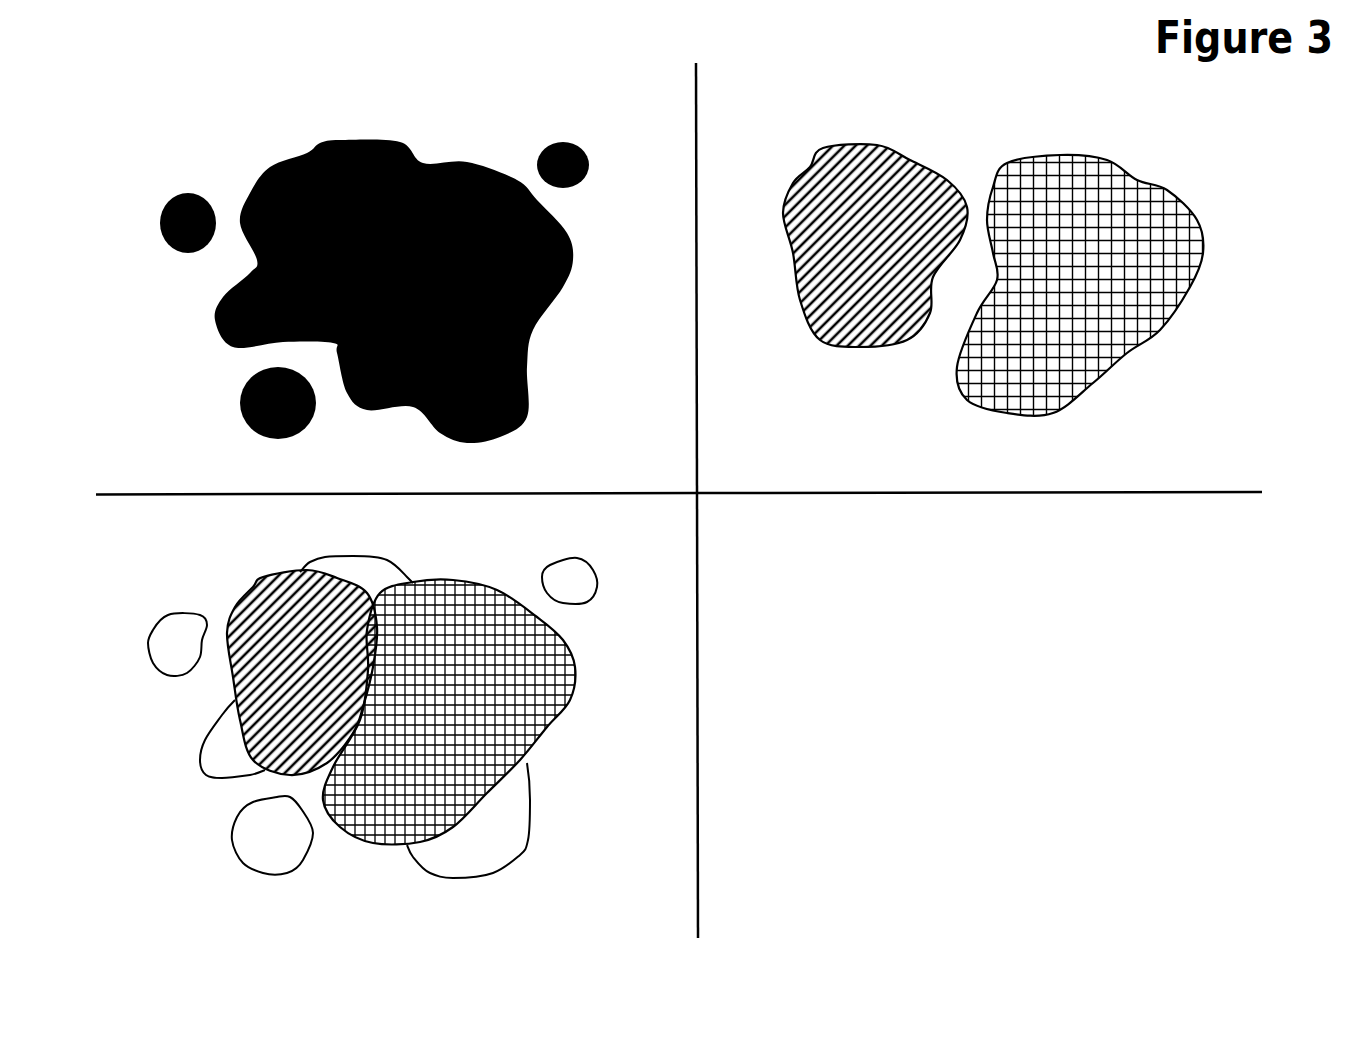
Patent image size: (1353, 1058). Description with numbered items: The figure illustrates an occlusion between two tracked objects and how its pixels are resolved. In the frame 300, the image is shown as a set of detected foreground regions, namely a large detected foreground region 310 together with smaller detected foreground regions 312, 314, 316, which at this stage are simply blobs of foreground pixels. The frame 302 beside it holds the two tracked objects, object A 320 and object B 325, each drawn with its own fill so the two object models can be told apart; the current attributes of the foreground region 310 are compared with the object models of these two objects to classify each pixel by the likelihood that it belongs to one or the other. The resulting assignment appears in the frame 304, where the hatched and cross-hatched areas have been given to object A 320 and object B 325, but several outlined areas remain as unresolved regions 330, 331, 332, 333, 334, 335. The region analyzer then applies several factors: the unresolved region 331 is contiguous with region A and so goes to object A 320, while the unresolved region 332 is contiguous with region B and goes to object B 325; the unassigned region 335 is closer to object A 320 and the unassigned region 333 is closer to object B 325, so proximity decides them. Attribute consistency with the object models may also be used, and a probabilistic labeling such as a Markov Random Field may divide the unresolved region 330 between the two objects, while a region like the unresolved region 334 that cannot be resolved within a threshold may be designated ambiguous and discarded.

The frame 300 is at (396, 481).
The second image quadrant (classified regions) 302 is at (979, 278).
The frame 304 is at (668, 715).
The detected foreground region 310 is at (394, 285).
The detected foreground region 312 is at (171, 213).
The detected foreground region 314 is at (255, 403).
The detected foreground region 316 is at (567, 150).
The tracked object A 320 is at (875, 220).
The tracked object B 325 is at (1080, 259).
The unresolved region 330 is at (401, 686).
The unresolved region 331 is at (197, 739).
The unresolved region 332 is at (496, 820).
The unassigned region 333 is at (552, 579).
The unresolved region 334 is at (256, 841).
The unassigned region 335 is at (172, 625).